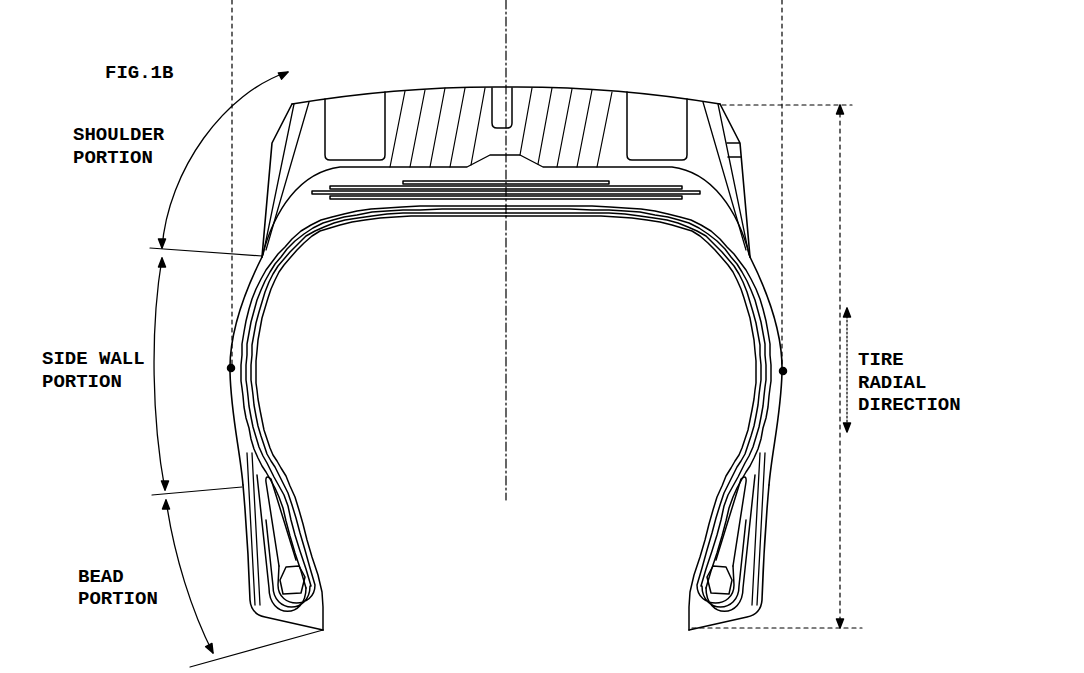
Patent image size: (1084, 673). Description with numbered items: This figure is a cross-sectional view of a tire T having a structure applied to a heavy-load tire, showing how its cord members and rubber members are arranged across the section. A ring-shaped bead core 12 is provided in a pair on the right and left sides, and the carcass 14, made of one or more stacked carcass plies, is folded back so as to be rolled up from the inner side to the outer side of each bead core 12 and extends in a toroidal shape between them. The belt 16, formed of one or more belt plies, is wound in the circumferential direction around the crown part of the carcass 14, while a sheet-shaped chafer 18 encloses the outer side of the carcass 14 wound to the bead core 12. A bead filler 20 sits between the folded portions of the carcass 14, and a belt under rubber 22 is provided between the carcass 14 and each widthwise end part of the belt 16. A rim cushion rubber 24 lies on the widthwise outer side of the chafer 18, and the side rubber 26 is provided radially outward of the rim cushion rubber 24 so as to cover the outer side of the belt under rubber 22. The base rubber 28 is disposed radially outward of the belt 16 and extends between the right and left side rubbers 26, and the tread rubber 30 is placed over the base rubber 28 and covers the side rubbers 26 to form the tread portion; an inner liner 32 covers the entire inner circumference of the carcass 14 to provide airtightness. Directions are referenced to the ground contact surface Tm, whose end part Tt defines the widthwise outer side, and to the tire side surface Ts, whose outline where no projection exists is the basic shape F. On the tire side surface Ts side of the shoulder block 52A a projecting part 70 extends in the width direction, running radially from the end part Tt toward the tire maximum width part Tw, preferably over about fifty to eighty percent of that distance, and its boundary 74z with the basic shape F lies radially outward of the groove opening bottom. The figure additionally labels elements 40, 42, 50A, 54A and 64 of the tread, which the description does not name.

The bead core 12 is at (296, 582).
The carcass 14 is at (246, 366).
The belt 16 is at (443, 197).
The chafer 18 is at (257, 528).
The bead filler 20 is at (280, 532).
The belt under rubber 22 is at (321, 221).
The rim cushion rubber 24 is at (254, 558).
The side rubber 26 is at (232, 405).
The base rubber 28 is at (524, 172).
The tread rubber 30 is at (582, 160).
The inner liner 32 is at (274, 299).
The circumferential groove 40 is at (655, 112).
The circumferential groove 42 is at (357, 110).
The shoulder land portion 50A is at (706, 104).
The shoulder block 52A is at (308, 103).
The center land portion 54A is at (460, 100).
The center narrow groove 64 is at (501, 98).
The projecting part 70 is at (272, 143).
The boundary 74z is at (752, 258).
The end part of ground contact surface Tt is at (292, 104).
The ground contact surface Tm is at (564, 90).
The tire maximum width part Tw is at (228, 366).
The tire T is at (397, 227).
The basic shape F is at (762, 283).
The tire side surface Ts is at (825, 394).